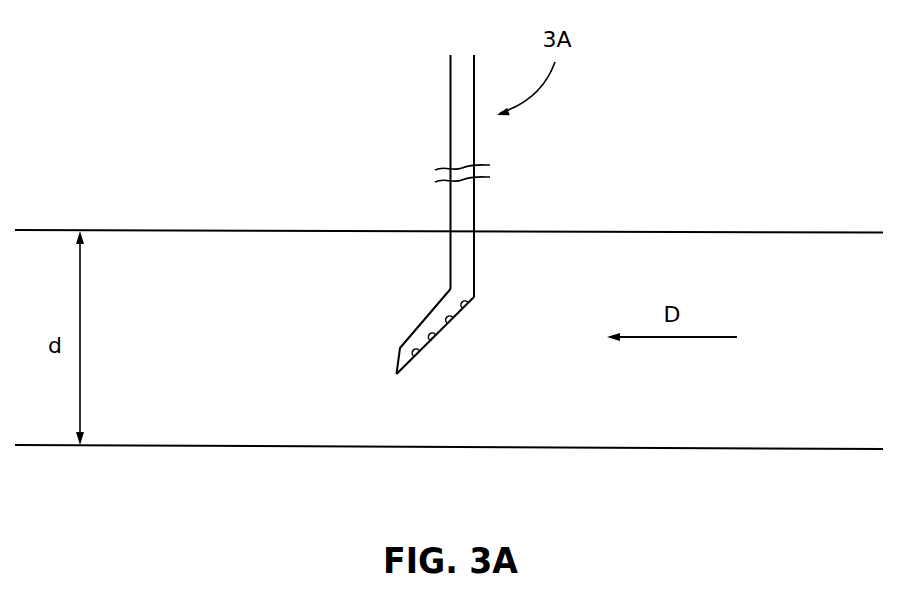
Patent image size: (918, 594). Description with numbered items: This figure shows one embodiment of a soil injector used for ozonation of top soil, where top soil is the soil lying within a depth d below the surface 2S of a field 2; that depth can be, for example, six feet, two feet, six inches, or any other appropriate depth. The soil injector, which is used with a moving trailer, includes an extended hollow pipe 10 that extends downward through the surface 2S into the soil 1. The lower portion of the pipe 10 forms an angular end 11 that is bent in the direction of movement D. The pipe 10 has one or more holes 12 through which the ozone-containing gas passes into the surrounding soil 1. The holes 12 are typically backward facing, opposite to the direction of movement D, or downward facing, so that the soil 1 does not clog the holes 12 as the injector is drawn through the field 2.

The soil 1 is at (159, 312).
The field 2 is at (185, 110).
The surface 2S is at (650, 232).
The extended hollow pipe 10 is at (475, 270).
The angular end 11 is at (435, 308).
The holes 12 is at (437, 336).